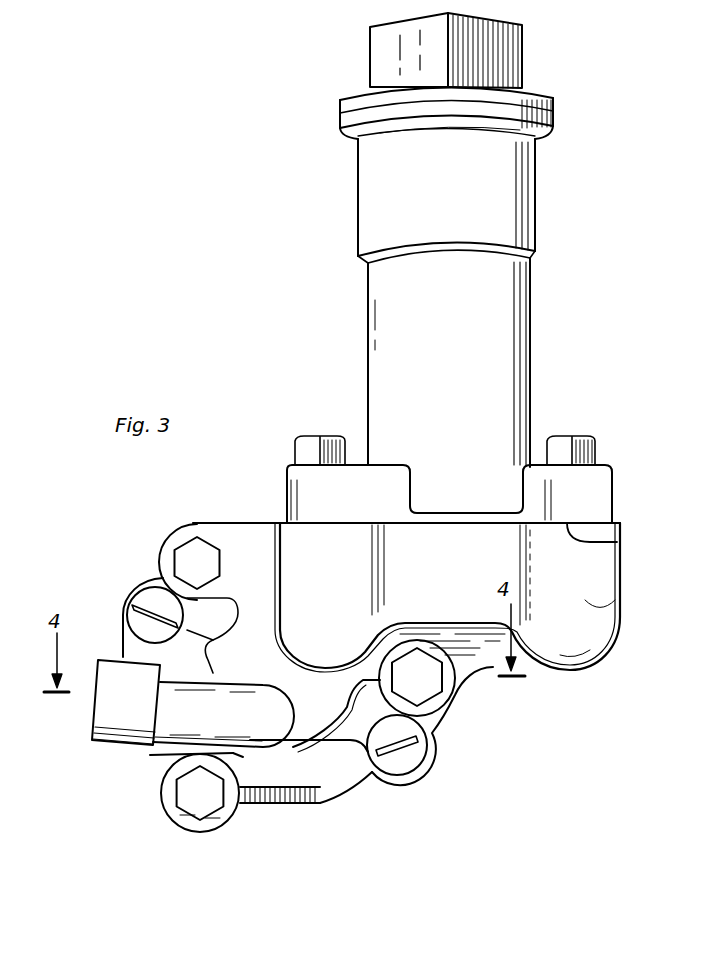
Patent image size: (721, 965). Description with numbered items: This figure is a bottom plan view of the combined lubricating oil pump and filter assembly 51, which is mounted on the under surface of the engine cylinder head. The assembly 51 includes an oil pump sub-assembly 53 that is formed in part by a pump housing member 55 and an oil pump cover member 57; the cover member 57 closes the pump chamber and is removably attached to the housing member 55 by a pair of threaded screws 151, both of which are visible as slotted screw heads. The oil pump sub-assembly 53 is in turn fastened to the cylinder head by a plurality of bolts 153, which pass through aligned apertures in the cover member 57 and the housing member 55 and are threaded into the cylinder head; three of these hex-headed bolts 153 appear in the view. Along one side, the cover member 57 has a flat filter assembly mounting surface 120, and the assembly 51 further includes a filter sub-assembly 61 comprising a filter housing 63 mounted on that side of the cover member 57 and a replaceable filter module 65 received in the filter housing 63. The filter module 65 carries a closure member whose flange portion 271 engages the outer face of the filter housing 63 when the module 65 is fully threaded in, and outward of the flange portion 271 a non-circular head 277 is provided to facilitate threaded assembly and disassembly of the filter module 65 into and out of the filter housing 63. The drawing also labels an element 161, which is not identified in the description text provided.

The non-circular head 277 is at (384, 44).
The replaceable filter module 65 is at (497, 66).
The flange portion 271 is at (343, 102).
The filter housing 63 is at (502, 281).
The filter sub-assembly 61 is at (503, 357).
The raised pedestal 161 is at (590, 523).
The combined lubricating oil pump and filter assembly 51 is at (559, 676).
The oil pump sub-assembly 53 is at (573, 568).
The oil pump cover member 57 is at (578, 623).
The filter assembly mounting surface 120 is at (612, 540).
The bolts 153 is at (201, 548).
The threaded screws 151 is at (157, 597).
The pump housing member 55 is at (303, 774).